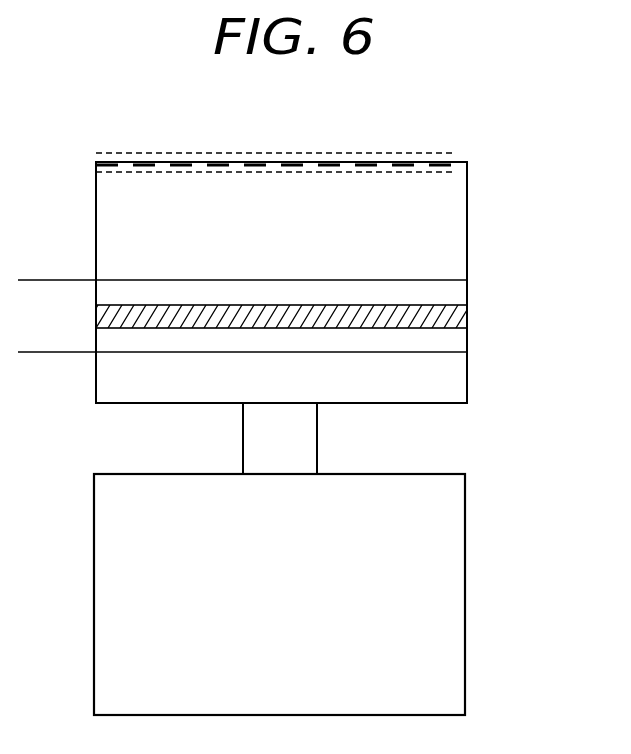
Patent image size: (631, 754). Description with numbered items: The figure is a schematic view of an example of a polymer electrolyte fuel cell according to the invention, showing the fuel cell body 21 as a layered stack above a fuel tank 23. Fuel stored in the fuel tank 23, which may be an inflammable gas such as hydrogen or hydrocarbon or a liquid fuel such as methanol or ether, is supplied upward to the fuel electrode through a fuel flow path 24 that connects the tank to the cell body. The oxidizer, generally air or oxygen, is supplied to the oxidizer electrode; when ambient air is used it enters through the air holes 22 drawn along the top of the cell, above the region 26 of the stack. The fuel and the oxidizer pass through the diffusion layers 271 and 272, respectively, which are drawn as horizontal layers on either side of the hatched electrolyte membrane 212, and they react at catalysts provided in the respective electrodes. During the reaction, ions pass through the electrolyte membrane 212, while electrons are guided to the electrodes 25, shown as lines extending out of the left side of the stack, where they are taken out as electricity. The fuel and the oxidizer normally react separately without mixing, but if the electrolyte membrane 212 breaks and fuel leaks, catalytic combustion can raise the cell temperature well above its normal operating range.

The substrate / solid-state image pickup element 21 is at (467, 192).
The air holes 22 is at (318, 165).
The fuel tank 23 is at (453, 593).
The fuel flow path 24 is at (305, 440).
The electrode 25 is at (42, 278).
The semiconductor layer 26 is at (455, 236).
The diffusion layer 271 is at (453, 293).
The electrolyte membrane 212 is at (455, 318).
The diffusion layer 272 is at (453, 343).